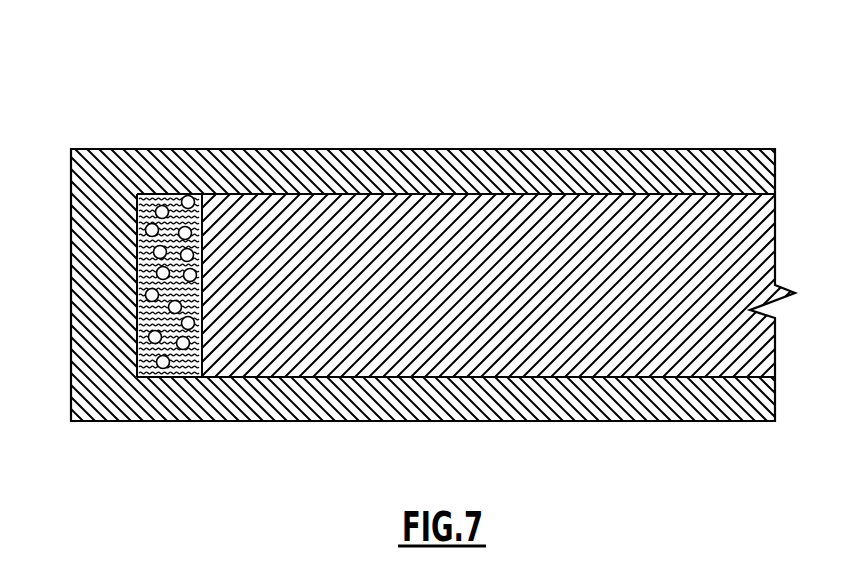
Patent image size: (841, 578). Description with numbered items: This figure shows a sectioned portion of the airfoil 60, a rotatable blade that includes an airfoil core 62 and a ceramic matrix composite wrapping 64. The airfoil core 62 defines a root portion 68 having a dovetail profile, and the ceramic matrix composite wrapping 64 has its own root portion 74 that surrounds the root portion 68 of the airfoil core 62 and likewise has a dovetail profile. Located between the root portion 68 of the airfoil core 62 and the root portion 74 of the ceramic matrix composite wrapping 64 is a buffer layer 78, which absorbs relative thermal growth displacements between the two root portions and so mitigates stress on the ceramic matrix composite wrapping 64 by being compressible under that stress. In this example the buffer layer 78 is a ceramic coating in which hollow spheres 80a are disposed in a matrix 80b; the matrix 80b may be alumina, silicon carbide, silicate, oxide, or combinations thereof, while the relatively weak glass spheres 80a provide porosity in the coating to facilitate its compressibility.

The airfoil 60 is at (162, 83).
The airfoil core 62 is at (507, 180).
The ceramic matrix composite wrapping 64 is at (306, 435).
The root portion 68 is at (436, 228).
The root portion 74 is at (248, 398).
The buffer layer 78 is at (184, 370).
The hollow spheres 80a is at (186, 196).
The matrix 80b is at (215, 197).